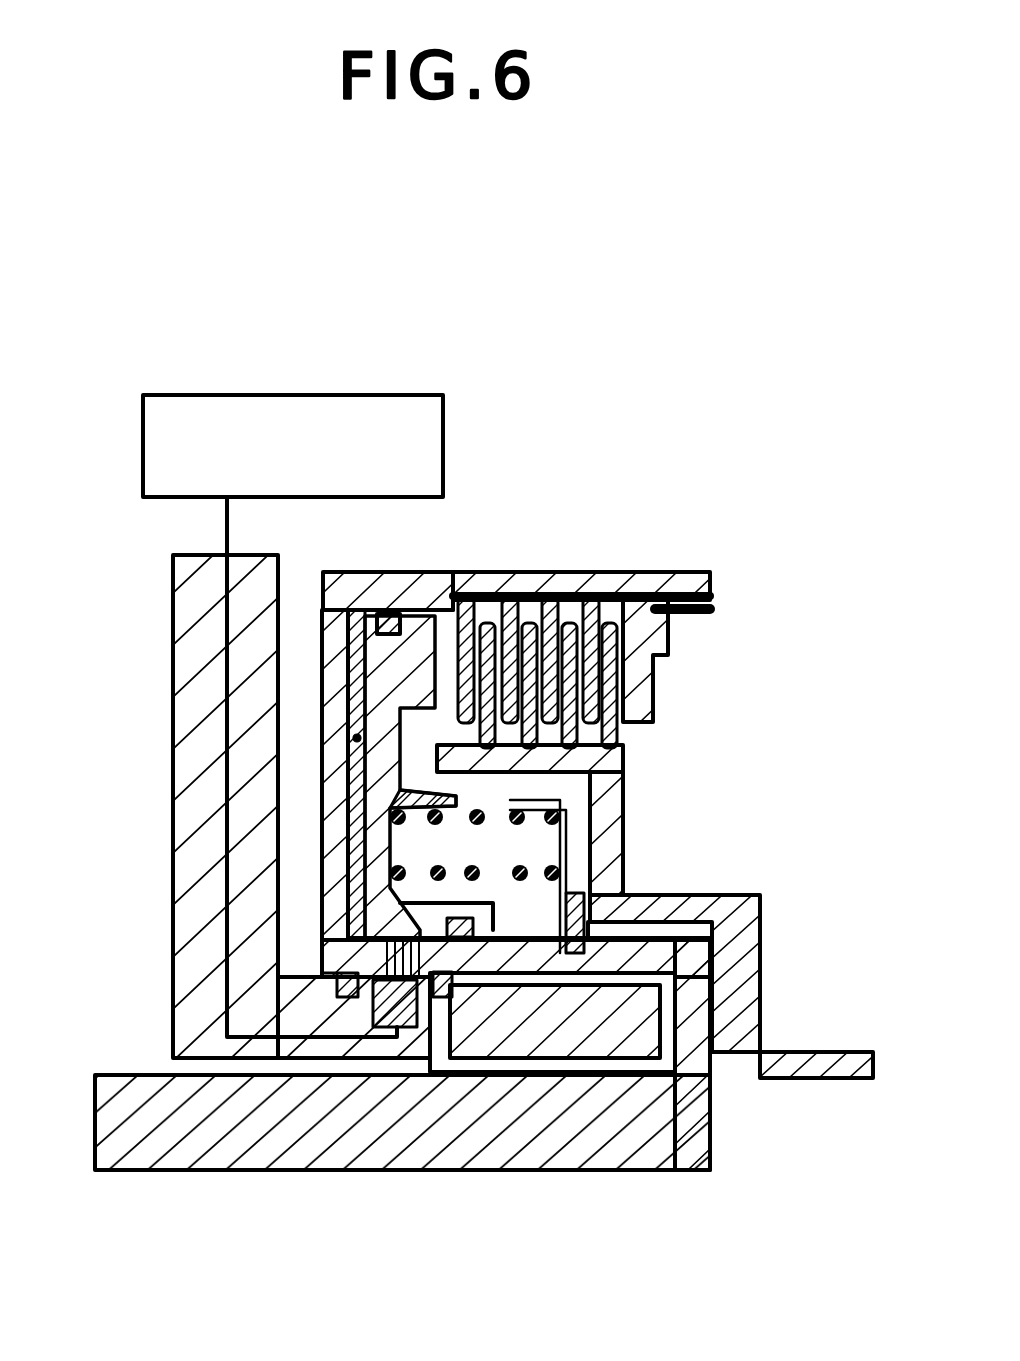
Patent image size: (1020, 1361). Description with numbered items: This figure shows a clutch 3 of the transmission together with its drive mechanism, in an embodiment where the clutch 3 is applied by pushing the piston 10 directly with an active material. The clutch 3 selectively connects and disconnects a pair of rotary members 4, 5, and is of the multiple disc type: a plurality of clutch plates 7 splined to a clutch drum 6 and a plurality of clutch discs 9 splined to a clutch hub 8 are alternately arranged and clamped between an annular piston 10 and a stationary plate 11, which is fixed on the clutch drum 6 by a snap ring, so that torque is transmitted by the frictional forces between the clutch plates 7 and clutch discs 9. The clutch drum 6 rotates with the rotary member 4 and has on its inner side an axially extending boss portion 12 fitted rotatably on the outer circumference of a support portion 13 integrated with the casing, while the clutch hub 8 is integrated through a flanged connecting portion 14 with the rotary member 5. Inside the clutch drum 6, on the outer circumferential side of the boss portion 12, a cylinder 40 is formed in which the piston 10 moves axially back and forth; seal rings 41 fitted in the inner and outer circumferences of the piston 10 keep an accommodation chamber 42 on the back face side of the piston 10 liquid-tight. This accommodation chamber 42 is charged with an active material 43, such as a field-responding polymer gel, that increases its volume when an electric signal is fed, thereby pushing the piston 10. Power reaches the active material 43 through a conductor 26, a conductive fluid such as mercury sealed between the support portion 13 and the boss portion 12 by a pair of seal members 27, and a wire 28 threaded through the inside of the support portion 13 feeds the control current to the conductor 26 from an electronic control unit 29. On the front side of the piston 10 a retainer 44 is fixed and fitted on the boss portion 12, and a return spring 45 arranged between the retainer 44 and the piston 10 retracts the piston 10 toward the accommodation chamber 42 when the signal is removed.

The clutch 3 is at (708, 635).
The rotary member 4 is at (207, 1142).
The rotary member 5 is at (822, 1056).
The clutch drum 6 is at (420, 574).
The clutch plates 7 is at (578, 597).
The clutch hub 8 is at (562, 757).
The clutch discs 9 is at (560, 697).
The piston 10 is at (455, 598).
The stationary plate 11 is at (637, 597).
The boss portion 12 is at (601, 953).
The support portion 13 is at (173, 660).
The flanged connecting portion 14 is at (608, 838).
The conductor 26 is at (403, 1000).
The seal members 27 is at (337, 988).
The wire 28 is at (225, 806).
The electronic control unit (ECU) 29 is at (428, 427).
The cylinder 40 is at (325, 628).
The seal rings 41 is at (390, 613).
The accommodation chamber 42 is at (340, 752).
The active material 43 is at (343, 905).
The retainer 44 is at (600, 800).
The return spring 45 is at (523, 880).